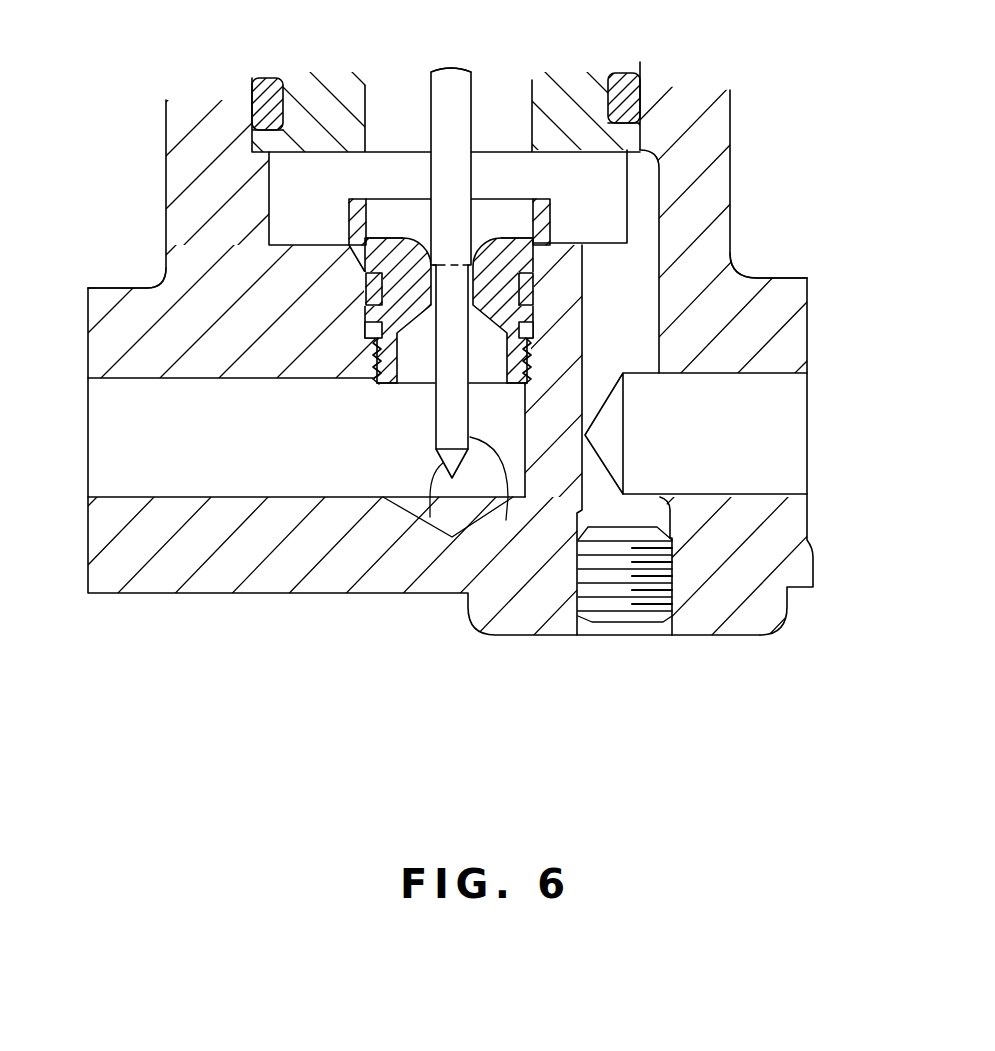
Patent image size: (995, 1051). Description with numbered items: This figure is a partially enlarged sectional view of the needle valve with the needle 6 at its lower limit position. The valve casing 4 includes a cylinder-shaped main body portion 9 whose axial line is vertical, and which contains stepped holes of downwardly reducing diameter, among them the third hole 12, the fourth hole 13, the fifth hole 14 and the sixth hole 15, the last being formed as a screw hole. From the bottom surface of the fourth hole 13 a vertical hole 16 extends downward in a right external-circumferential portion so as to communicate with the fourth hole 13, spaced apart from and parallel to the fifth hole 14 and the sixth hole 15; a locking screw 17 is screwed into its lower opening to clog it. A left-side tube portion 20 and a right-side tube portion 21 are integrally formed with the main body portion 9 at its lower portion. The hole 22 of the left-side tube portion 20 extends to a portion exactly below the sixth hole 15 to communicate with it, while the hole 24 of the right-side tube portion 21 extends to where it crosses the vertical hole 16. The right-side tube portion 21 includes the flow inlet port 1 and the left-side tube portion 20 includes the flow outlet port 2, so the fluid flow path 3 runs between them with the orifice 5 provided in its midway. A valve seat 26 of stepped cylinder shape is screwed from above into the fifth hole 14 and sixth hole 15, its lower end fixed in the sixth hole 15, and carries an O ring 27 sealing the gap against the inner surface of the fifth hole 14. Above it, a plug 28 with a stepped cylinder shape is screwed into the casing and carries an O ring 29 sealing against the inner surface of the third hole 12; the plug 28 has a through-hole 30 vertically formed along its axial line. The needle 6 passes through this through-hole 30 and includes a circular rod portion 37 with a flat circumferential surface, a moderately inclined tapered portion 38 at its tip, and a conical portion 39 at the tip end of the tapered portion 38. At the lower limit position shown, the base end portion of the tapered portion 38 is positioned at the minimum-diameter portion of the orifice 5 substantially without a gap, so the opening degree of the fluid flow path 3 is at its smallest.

The flow inlet port 1 is at (795, 437).
The flow outlet port 2 is at (107, 433).
The fluid flow path 3 is at (618, 277).
The valve casing 4 is at (166, 233).
The orifice 5 is at (482, 220).
The needle 6 is at (476, 107).
The main body portion 9 is at (732, 115).
The third hole 12 is at (285, 136).
The fourth hole 13 is at (276, 185).
The fifth hole 14 is at (365, 320).
The sixth hole 15 is at (395, 388).
The vertical hole 16 is at (658, 321).
The locking screw 17 is at (622, 622).
The left-side tube portion 20 is at (120, 288).
The right-side tube portion 21 is at (786, 277).
The hole 22 is at (123, 498).
The hole 24 is at (773, 493).
The valve seat 26 is at (554, 222).
The O ring 27 is at (365, 286).
The plug 28 is at (580, 72).
The O ring 29 is at (641, 100).
The through-hole 30 is at (367, 100).
The circular rod portion 37 is at (432, 97).
The tapered portion 38 is at (506, 520).
The conical portion 39 is at (430, 517).